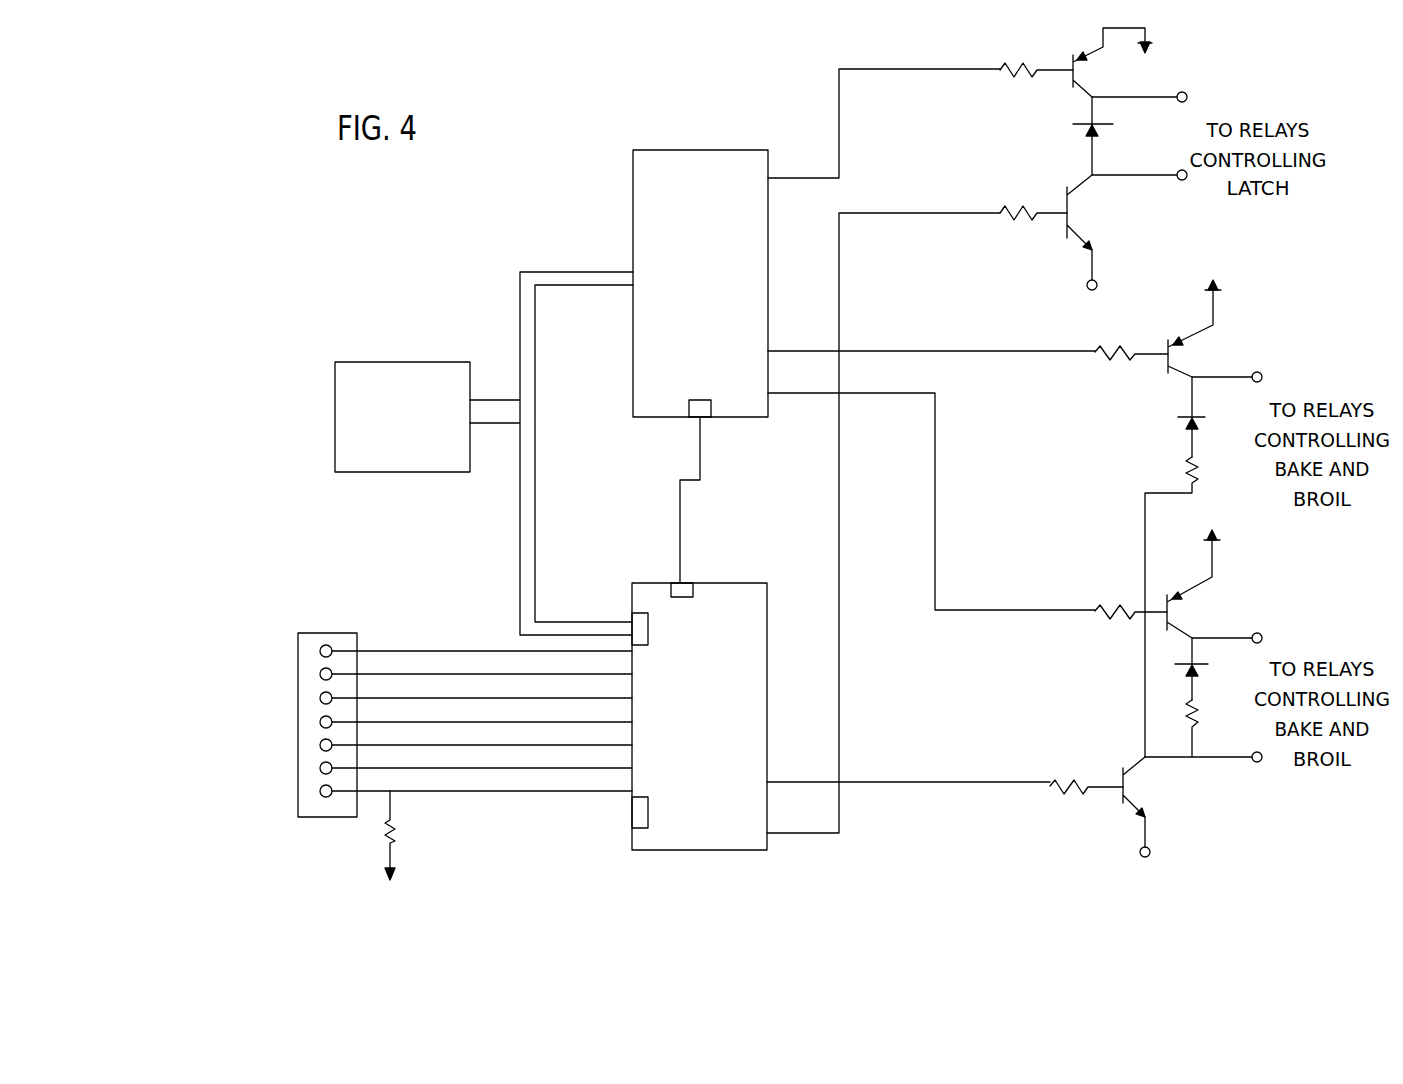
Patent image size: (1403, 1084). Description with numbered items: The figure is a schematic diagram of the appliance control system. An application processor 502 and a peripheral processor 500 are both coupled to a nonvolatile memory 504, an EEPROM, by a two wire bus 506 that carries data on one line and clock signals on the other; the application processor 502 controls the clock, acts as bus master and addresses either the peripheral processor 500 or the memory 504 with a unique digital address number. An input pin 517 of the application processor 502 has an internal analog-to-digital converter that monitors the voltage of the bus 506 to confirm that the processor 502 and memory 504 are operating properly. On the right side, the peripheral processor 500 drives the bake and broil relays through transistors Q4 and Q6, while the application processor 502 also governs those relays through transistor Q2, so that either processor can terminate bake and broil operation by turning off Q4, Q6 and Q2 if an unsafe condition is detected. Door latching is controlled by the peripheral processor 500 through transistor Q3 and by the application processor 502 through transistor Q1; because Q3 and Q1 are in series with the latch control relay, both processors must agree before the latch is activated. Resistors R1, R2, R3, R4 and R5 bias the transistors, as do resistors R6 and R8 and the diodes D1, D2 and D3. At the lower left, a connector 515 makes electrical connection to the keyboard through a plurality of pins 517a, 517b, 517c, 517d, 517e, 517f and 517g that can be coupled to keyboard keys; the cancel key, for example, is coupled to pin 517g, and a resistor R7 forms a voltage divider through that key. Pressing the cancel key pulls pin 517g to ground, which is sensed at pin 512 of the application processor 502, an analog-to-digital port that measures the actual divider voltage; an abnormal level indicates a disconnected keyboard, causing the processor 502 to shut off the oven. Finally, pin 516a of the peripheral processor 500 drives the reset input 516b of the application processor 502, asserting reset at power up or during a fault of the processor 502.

The peripheral processor 500 is at (742, 150).
The application processor 502 is at (648, 583).
The nonvolatile memory 504 is at (382, 362).
The two wire bus 506 is at (518, 312).
The pin 512 is at (645, 830).
The connector 515 is at (312, 633).
The pin 516a is at (704, 400).
The reset input 516b is at (686, 588).
The input pin 517 is at (636, 622).
The pin 517a is at (320, 651).
The pin 517b is at (320, 674).
The pin 517c is at (320, 698).
The pin 517d is at (320, 722).
The pin 517e is at (320, 745).
The pin 517f is at (320, 768).
The pin 517g is at (320, 791).
The resistor R1 is at (1036, 54).
The resistor R2 is at (1033, 190).
The resistor R3 is at (1129, 336).
The resistor R4 is at (1128, 595).
The resistor R5 is at (1084, 769).
The resistor R6 is at (1161, 604).
The resistor R7 is at (406, 835).
The resistor R8 is at (1203, 731).
The transistor Q1 is at (1100, 246).
The transistor Q2 is at (1154, 821).
The transistor Q3 is at (1130, 65).
The transistor Q4 is at (1214, 586).
The transistor Q6 is at (1215, 331).
The diode D1 is at (1130, 138).
The diode D2 is at (1208, 417).
The diode D3 is at (1209, 669).